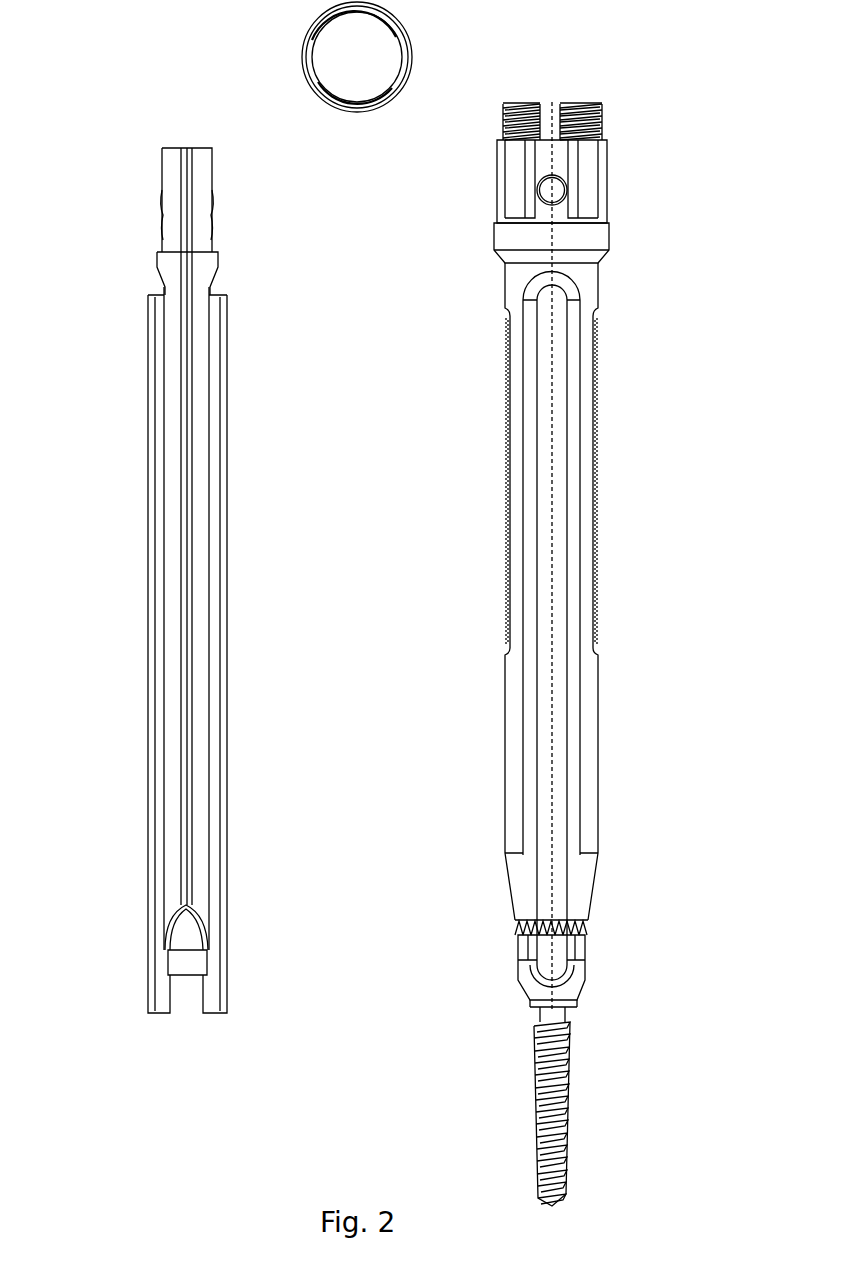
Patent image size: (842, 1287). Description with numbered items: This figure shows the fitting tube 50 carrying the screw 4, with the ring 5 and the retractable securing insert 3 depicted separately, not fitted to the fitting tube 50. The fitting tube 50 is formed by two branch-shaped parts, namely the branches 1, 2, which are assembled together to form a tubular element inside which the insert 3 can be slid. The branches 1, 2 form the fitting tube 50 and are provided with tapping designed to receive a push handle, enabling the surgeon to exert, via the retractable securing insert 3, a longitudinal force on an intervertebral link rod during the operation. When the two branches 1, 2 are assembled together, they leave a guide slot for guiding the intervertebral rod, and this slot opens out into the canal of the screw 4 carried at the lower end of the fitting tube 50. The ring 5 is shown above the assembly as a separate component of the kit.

The branch-shaped part 1 is at (485, 639).
The branch-shaped part 2 is at (608, 639).
The retractable securing insert 3 is at (125, 626).
The screw 4 is at (563, 947).
The ring 5 is at (425, 23).
The fitting tube 50 is at (635, 373).